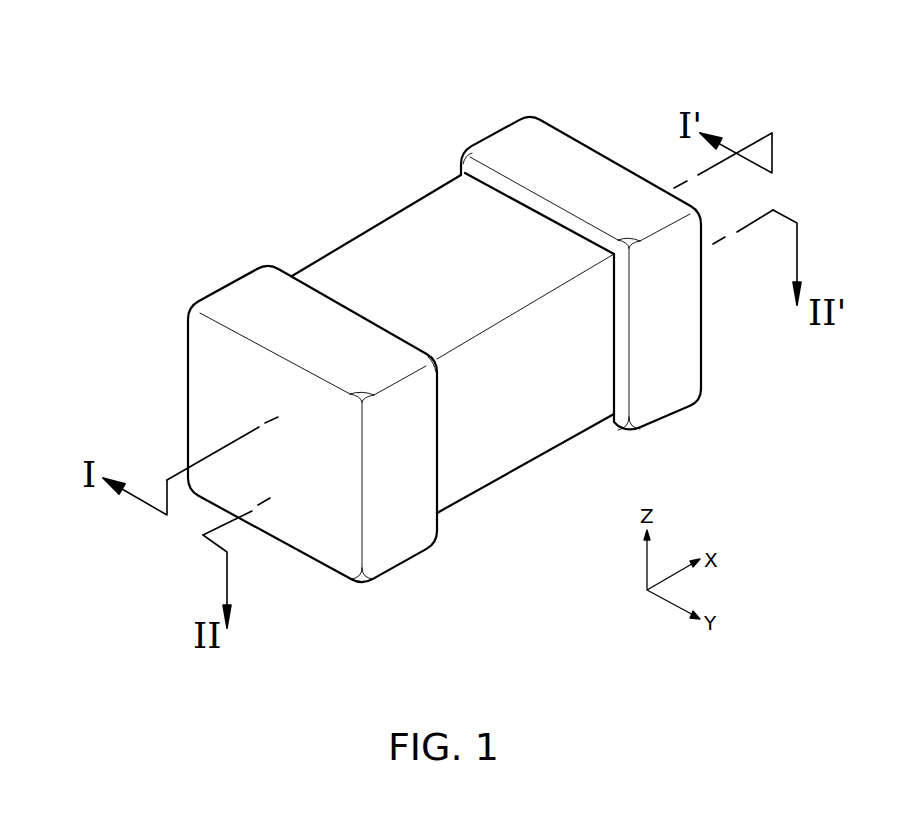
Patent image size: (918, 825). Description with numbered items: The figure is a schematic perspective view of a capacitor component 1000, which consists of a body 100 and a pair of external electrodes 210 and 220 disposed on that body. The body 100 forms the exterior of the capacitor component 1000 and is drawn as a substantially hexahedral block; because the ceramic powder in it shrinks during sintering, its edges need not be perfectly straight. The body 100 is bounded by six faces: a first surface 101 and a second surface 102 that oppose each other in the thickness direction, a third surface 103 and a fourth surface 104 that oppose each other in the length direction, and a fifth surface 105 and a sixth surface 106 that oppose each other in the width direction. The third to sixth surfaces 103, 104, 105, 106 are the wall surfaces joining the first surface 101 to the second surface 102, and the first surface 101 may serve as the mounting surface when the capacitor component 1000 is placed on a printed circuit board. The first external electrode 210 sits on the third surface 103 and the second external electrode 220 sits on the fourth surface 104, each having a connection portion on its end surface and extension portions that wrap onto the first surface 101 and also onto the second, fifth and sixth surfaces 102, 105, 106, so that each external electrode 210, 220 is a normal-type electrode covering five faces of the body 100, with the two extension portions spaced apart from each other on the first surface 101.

The capacitor component 1000 is at (426, 318).
The body 100 is at (460, 342).
The first surface 101 is at (485, 455).
The second surface 102 is at (433, 237).
The third surface 103 is at (252, 393).
The fourth surface 104 is at (583, 172).
The fifth surface 105 is at (560, 393).
The sixth surface 106 is at (357, 250).
The first external electrode 210 is at (280, 392).
The second external electrode 220 is at (595, 238).